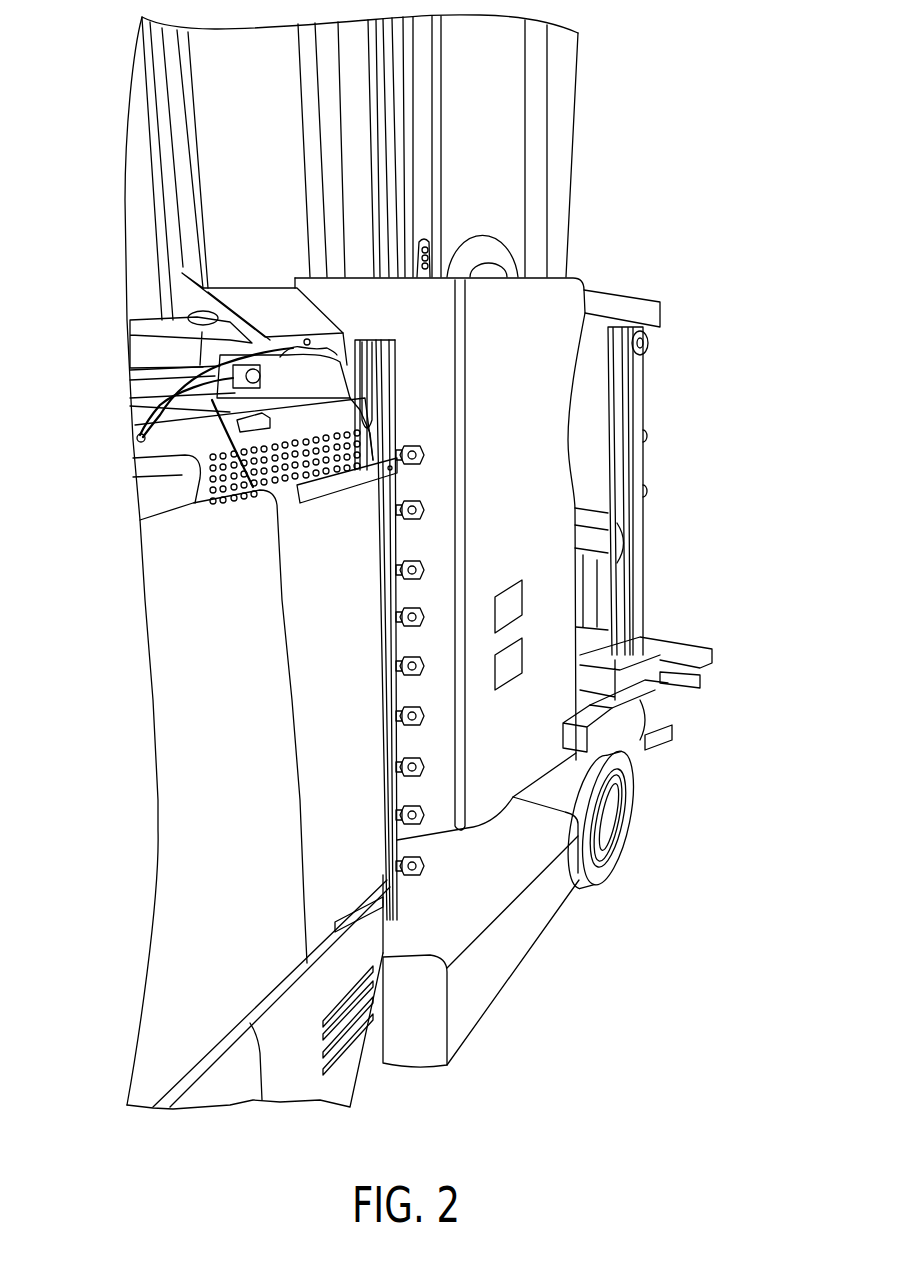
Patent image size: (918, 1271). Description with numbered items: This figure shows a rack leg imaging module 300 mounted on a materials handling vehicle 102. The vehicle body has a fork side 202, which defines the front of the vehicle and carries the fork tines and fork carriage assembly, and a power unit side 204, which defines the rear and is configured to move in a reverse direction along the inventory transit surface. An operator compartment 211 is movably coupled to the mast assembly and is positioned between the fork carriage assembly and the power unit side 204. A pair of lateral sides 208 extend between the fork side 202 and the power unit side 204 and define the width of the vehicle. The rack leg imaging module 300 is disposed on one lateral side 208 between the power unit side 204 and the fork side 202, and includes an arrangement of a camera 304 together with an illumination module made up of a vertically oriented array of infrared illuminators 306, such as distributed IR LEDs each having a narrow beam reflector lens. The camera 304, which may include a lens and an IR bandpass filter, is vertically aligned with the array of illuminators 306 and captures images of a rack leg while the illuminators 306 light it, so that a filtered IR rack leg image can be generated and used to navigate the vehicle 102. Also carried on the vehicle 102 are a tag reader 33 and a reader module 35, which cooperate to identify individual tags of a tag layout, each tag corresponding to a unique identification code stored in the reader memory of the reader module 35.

The materials handling vehicle 102 is at (712, 214).
The fork side 202 is at (715, 560).
The power unit side 204 is at (105, 780).
The lateral side 208 is at (226, 915).
The operator compartment 211 is at (476, 195).
The rack leg imaging module 300 is at (372, 814).
The camera 304 is at (372, 669).
The illuminators 306 is at (420, 450).
The tag reader 33 is at (508, 583).
The reader module 35 is at (508, 681).